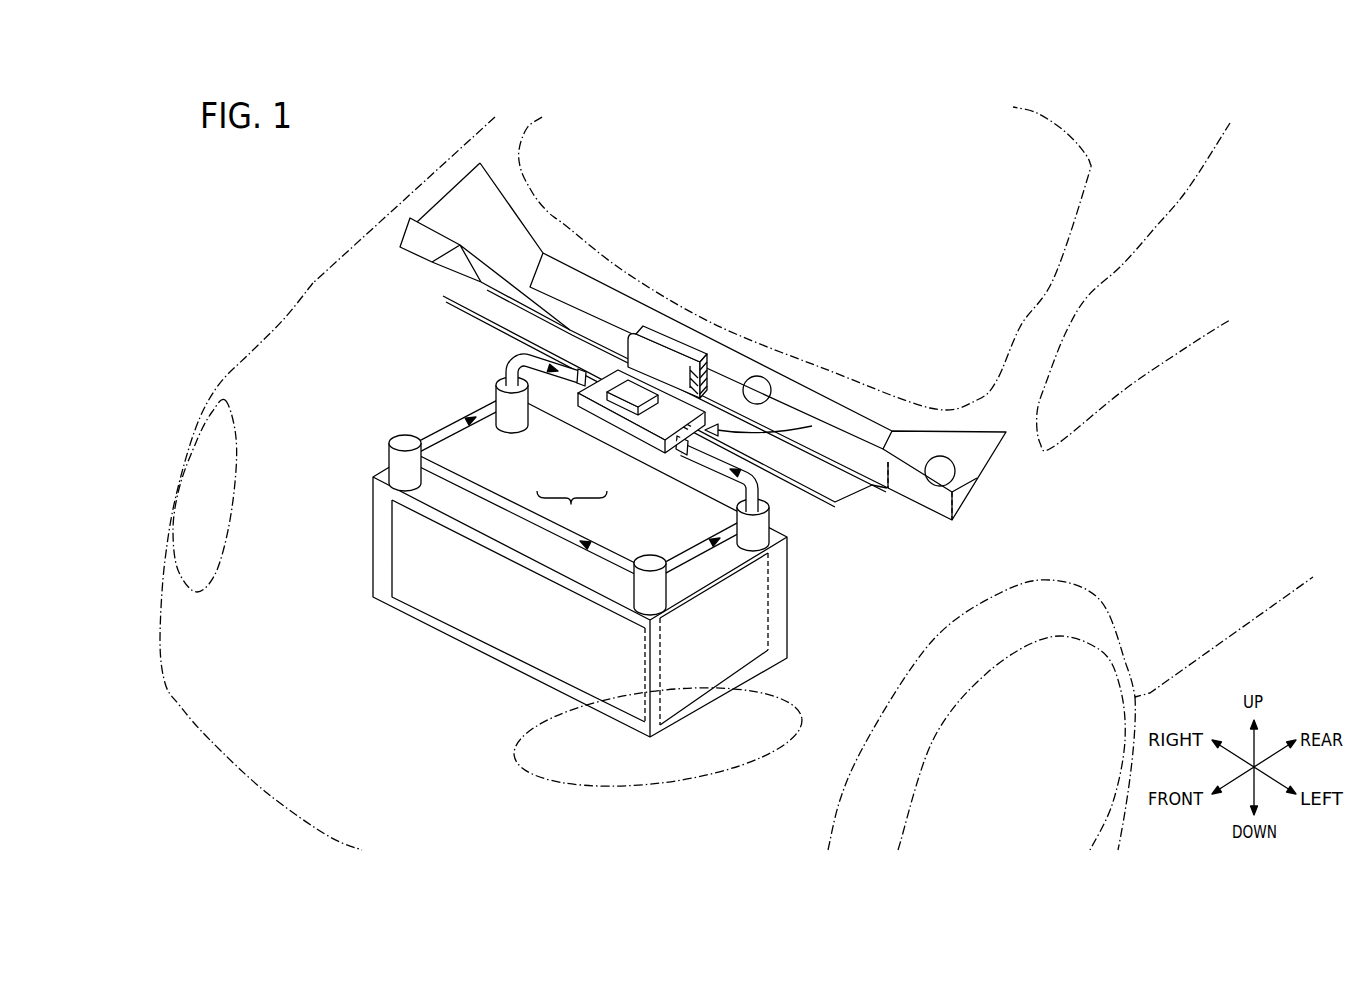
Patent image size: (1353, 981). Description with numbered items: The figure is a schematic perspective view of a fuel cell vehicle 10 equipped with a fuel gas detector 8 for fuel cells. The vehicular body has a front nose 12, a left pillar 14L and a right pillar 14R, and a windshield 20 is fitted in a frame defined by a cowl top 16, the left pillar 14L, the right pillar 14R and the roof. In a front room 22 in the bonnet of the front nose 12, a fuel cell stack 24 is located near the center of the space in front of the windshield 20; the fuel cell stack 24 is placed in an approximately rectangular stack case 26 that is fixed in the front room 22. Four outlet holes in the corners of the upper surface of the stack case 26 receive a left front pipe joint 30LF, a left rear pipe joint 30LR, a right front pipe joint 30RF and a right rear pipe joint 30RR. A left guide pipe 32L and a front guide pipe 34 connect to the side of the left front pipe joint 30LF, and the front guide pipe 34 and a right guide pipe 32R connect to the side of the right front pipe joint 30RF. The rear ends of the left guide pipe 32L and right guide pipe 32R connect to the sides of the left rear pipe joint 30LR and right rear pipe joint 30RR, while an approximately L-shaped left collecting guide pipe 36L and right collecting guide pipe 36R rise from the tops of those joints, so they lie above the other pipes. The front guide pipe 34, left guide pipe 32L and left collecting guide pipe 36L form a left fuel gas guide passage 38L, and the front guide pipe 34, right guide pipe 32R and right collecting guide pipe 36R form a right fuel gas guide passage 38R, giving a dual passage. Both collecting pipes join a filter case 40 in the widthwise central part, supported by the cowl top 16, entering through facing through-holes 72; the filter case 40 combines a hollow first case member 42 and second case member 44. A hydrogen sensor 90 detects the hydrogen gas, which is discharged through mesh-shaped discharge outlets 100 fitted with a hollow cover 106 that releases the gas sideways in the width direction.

The fuel gas detector 8 is at (765, 428).
The fuel cell vehicle 10 is at (367, 156).
The front nose 12 is at (317, 283).
The right pillar 14R is at (531, 125).
The left pillar 14L is at (1090, 285).
The cowl top 16 is at (730, 360).
The windshield 20 is at (1060, 343).
The front room 22 is at (297, 340).
The fuel cell stack 24 is at (390, 548).
The stack case 26 is at (388, 500).
The right front pipe joint 30RF is at (389, 456).
The right rear pipe joint 30RR is at (508, 418).
The left front pipe joint 30LF is at (640, 600).
The left rear pipe joint 30LR is at (768, 522).
The right guide pipe 32R is at (437, 438).
The left guide pipe 32L is at (690, 562).
The front guide pipe 34 is at (546, 525).
The right collecting guide pipe 36R is at (521, 360).
The left collecting guide pipe 36L is at (709, 451).
The right fuel gas guide passage 38R is at (470, 404).
The left fuel gas guide passage 38L is at (750, 551).
The filter case 40 is at (621, 379).
The first case member 42 is at (630, 437).
The second case member 44 is at (599, 364).
The through-holes 72 is at (579, 370).
The hydrogen sensor 90 is at (635, 390).
The discharge outlets 100 is at (680, 356).
The hollow cover 106 is at (657, 362).